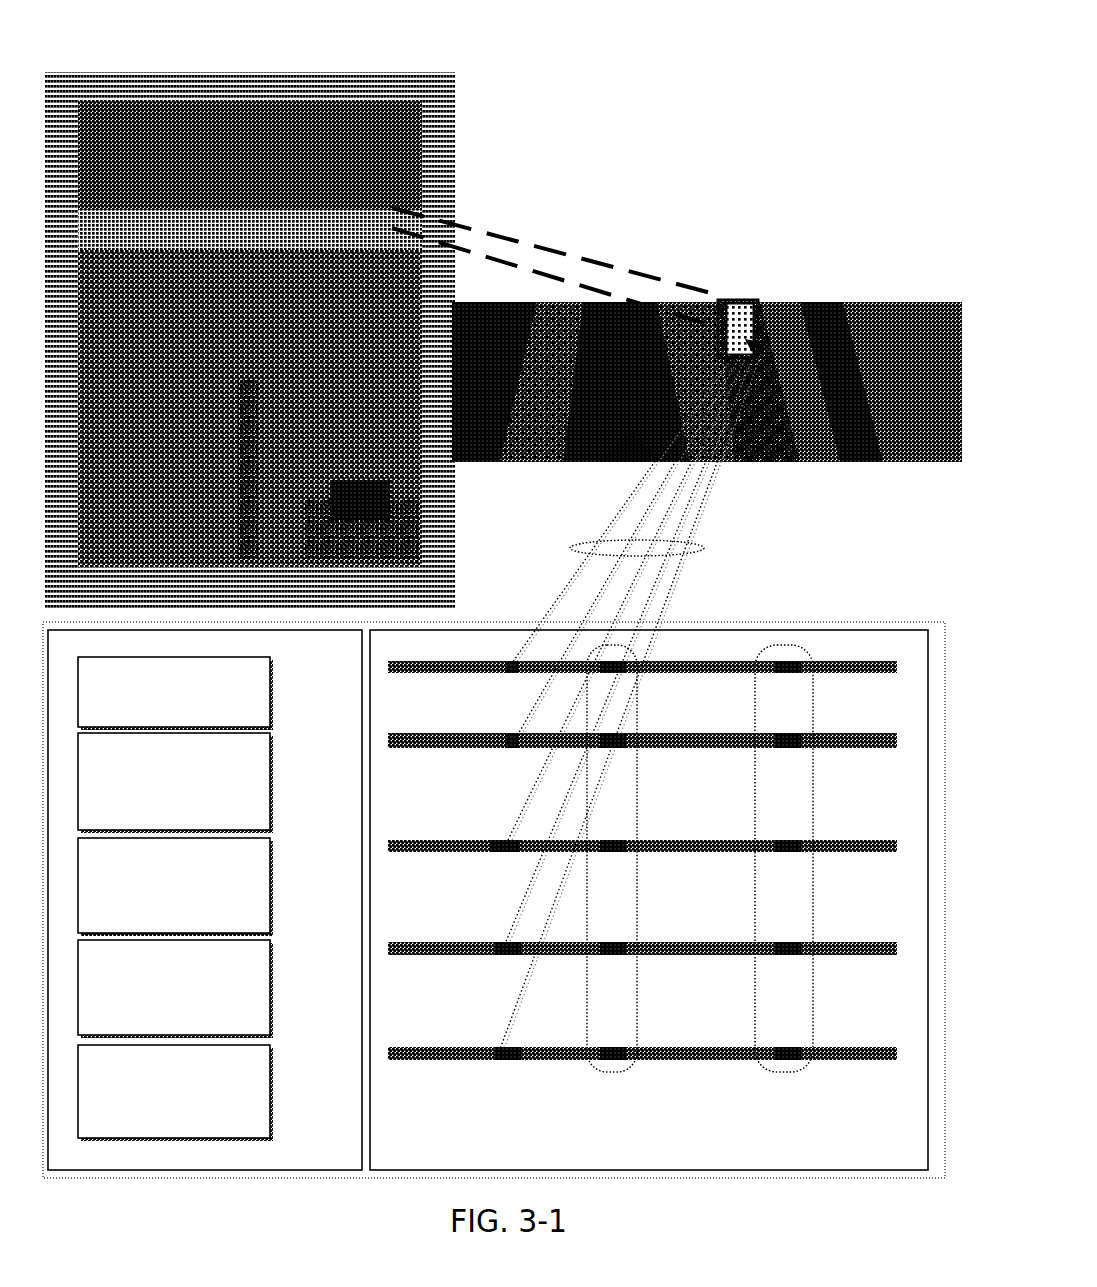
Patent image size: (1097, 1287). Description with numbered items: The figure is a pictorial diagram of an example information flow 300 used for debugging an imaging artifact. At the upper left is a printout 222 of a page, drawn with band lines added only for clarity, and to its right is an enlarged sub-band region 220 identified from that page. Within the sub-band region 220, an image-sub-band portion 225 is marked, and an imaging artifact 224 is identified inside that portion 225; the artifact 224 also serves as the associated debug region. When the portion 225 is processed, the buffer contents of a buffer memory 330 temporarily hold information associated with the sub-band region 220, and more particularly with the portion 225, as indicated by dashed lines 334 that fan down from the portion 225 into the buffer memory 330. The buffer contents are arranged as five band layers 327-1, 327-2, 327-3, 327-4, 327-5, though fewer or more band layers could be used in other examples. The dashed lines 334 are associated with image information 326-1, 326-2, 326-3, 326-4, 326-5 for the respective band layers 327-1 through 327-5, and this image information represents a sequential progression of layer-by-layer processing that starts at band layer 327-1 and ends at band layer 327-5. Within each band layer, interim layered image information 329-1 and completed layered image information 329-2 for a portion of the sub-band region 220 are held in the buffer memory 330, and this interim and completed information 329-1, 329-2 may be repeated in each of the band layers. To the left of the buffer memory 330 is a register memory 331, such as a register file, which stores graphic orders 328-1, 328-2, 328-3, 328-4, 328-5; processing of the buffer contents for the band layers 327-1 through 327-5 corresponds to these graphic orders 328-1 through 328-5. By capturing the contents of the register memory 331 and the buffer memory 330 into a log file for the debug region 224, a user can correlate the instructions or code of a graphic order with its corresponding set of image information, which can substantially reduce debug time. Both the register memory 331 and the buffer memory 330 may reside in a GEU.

The printout 222 is at (183, 33).
The information flow 300 is at (832, 63).
The sub-band region 220 is at (553, 462).
The imaging artifact 224 is at (755, 347).
The image-sub-band portion 225 is at (759, 304).
The dashed lines 334 is at (695, 545).
The register memory 331 is at (205, 900).
The graphic order 328-1 is at (175, 693).
The graphic order 328-2 is at (175, 783).
The graphic order 328-3 is at (175, 887).
The graphic order 328-4 is at (175, 989).
The graphic order 328-5 is at (175, 1093).
The buffer memory 330 is at (649, 900).
The image information 326-1 is at (506, 674).
The image information 326-2 is at (506, 749).
The image information 326-3 is at (506, 853).
The image information 326-4 is at (506, 956).
The image information 326-5 is at (506, 1061).
The band layer 327-1 is at (843, 674).
The band layer 327-2 is at (843, 749).
The band layer 327-3 is at (843, 853).
The band layer 327-4 is at (843, 956).
The band layer 327-5 is at (843, 1061).
The interim layered image information 329-1 is at (643, 805).
The completed layered image information 329-2 is at (752, 918).